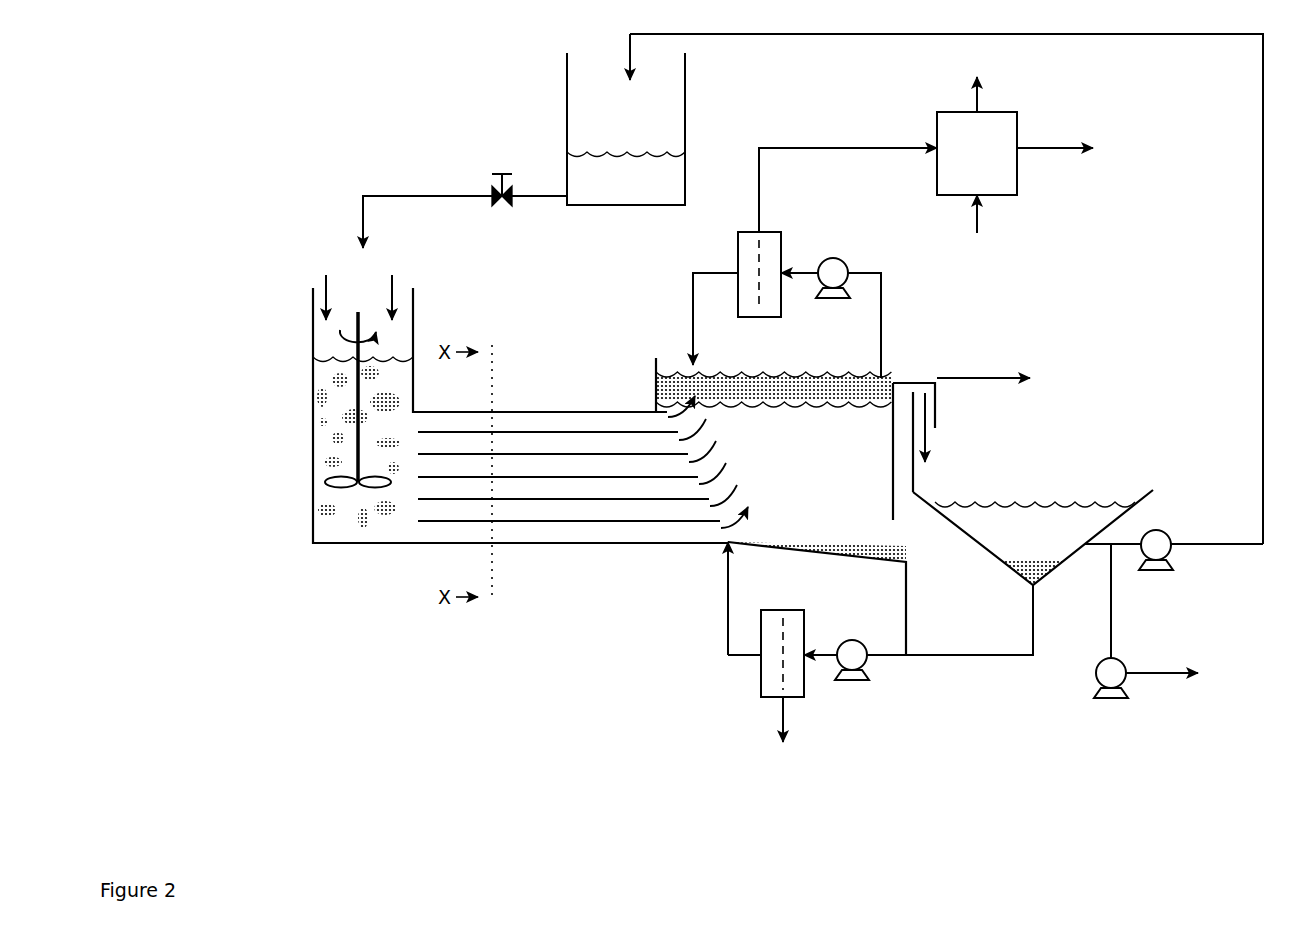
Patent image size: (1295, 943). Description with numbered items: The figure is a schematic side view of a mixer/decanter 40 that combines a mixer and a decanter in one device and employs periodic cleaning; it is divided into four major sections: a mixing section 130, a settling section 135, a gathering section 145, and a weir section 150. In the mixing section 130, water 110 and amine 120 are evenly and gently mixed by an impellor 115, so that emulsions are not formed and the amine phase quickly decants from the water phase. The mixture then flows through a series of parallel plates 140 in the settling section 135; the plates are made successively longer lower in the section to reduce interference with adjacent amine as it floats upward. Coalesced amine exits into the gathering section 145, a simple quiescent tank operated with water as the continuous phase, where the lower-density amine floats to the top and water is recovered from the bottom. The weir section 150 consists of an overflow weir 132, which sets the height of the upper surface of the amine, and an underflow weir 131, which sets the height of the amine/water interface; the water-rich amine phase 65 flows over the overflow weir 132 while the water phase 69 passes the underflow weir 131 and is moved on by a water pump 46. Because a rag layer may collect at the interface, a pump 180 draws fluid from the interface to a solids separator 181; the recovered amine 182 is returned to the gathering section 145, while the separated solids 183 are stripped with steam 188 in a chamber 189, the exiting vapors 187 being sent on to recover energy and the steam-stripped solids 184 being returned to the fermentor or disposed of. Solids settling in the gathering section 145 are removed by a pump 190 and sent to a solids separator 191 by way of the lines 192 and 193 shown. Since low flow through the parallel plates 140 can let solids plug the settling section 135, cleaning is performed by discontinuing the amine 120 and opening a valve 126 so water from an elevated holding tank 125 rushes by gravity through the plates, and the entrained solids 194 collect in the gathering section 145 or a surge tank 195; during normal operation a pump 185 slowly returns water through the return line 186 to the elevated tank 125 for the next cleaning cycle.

The mixer/decanter 40 is at (536, 411).
The water pump 46 is at (1108, 698).
The water-rich amine phase 65 is at (990, 378).
The water phase 69 is at (1168, 676).
The water 110 is at (298, 271).
The impellor 115 is at (345, 451).
The amine 120 is at (410, 272).
The elevated holding tank 125 is at (687, 168).
The valve 126 is at (494, 206).
The mixing section 130 is at (482, 431).
The underflow weir 131 is at (913, 393).
The overflow weir 132 is at (918, 384).
The settling section 135 is at (583, 503).
The parallel plates 140 is at (607, 521).
The gathering section 145 is at (781, 506).
The weir section 150 is at (995, 406).
The pump 180 is at (832, 258).
The solids separator 181 is at (765, 317).
The amine 182 is at (690, 355).
The separated solids 183 is at (845, 148).
The steam-stripped solids 184 is at (1035, 150).
The pump 185 is at (1153, 570).
The recycle line 186 is at (1262, 334).
The exiting vapors 187 is at (980, 100).
The steam 188 is at (982, 218).
The chamber 189 is at (1017, 197).
The pump 190 is at (855, 680).
The solids separator 191 is at (795, 610).
The return line 192 is at (745, 657).
The drain line 193 is at (780, 715).
The entrained solids 194 is at (1012, 568).
The surge tank 195 is at (1147, 491).